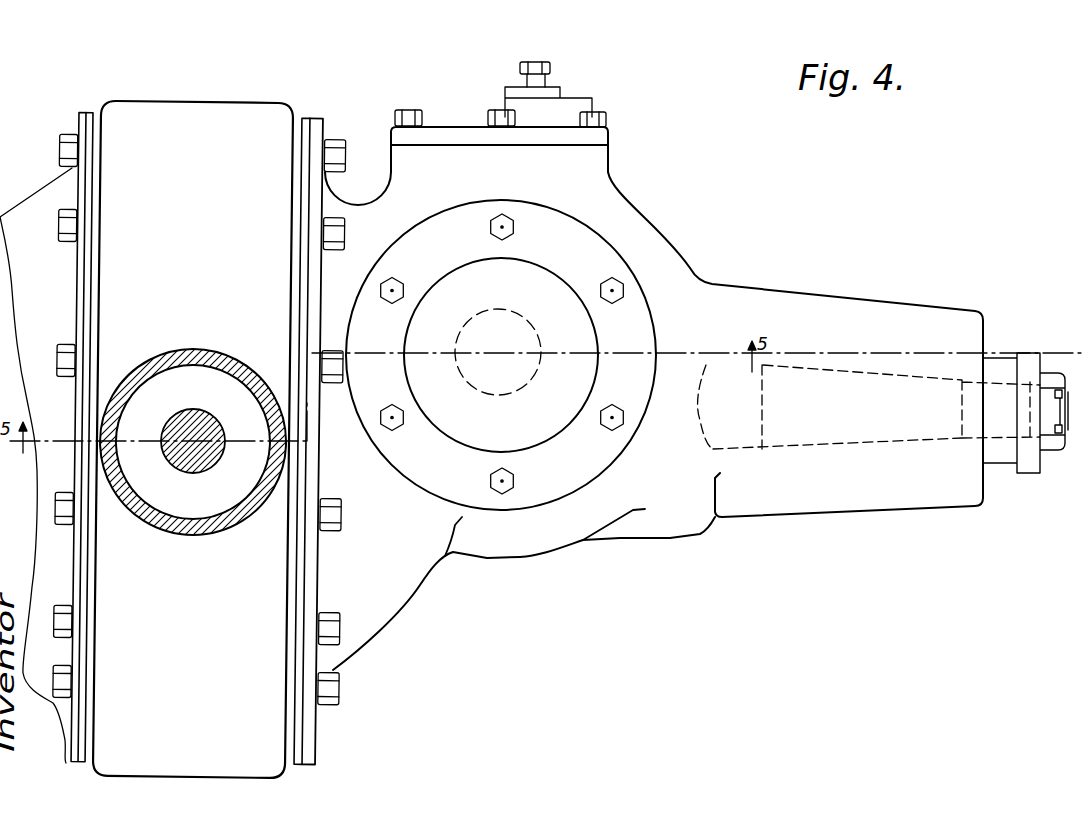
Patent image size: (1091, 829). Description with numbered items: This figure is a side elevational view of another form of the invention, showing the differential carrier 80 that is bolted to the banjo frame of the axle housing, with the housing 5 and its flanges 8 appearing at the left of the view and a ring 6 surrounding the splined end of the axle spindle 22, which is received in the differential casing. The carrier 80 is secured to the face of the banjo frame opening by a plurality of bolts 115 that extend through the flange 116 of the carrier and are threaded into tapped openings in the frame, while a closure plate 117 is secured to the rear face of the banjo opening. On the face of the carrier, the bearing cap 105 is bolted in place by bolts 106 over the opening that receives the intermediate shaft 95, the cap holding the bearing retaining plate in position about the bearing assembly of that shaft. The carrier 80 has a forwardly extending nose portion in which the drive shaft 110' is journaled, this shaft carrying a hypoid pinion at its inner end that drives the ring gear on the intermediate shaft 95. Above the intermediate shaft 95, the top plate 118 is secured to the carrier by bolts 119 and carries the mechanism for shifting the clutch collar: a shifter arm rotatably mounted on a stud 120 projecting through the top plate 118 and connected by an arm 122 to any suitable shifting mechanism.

The cylindrical casing body 5 is at (207, 118).
The bearing ring 6 is at (193, 350).
The casing flanges 8 is at (98, 114).
The axle spindle 22 is at (193, 410).
The differential carrier 80 is at (698, 278).
The intermediate shaft 95 is at (516, 309).
The bearing cap 105 is at (597, 243).
The bolts 106 is at (460, 244).
The drive shaft 110' is at (852, 432).
The bolts 115 is at (343, 217).
The flange 116 is at (317, 130).
The closure plate 117 is at (45, 193).
The top plate 118 is at (593, 140).
The bolts 119 is at (422, 114).
The stud 120 is at (550, 76).
The arm 122 is at (577, 102).